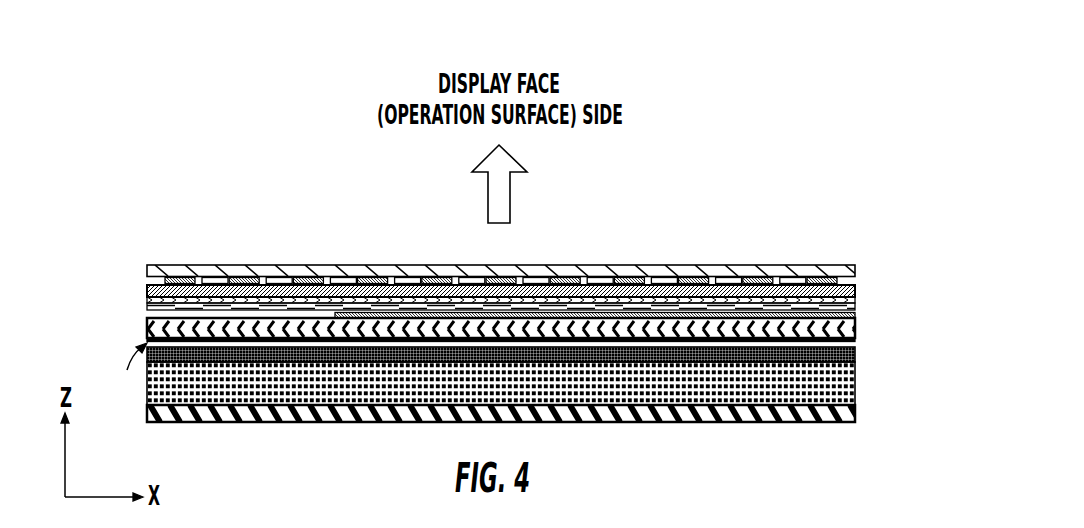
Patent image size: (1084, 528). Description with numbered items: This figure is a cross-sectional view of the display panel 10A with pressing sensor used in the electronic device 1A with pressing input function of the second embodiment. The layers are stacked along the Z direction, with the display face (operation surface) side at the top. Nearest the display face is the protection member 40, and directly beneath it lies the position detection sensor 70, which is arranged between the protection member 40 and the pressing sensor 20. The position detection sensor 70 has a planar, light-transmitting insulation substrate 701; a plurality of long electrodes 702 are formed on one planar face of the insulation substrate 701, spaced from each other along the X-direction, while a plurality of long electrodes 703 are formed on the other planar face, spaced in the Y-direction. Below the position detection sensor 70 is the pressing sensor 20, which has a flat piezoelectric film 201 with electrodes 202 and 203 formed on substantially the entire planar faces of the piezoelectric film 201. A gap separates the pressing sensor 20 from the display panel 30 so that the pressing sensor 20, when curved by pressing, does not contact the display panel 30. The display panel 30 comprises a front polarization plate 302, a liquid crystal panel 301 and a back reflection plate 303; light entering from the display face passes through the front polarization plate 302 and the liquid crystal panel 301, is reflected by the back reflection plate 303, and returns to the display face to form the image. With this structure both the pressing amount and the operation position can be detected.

The electronic device with pressing input function 1A is at (241, 212).
The display panel with pressing sensor 10A is at (885, 279).
The protection member 40 is at (787, 268).
The position detection sensor 70 is at (80, 250).
The insulation substrate 701 is at (147, 293).
The electrodes 702 is at (147, 272).
The electrodes 703 is at (147, 310).
The pressing sensor 20 is at (922, 285).
The piezoelectric film 201 is at (855, 325).
The electrode 202 is at (855, 312).
The electrode 203 is at (855, 337).
The display panel 30 is at (922, 370).
The liquid crystal panel 301 is at (855, 387).
The front polarization plate 302 is at (855, 357).
The back reflection plate 303 is at (855, 417).